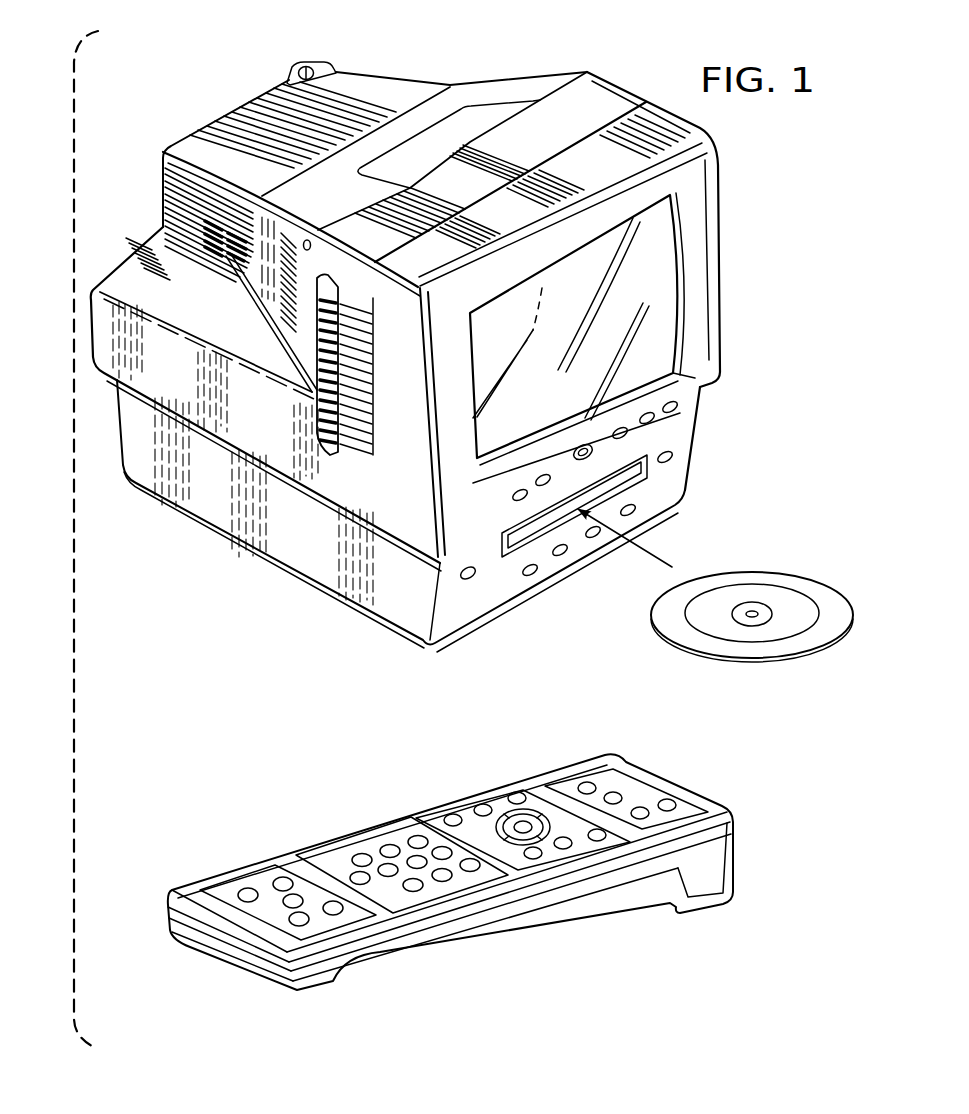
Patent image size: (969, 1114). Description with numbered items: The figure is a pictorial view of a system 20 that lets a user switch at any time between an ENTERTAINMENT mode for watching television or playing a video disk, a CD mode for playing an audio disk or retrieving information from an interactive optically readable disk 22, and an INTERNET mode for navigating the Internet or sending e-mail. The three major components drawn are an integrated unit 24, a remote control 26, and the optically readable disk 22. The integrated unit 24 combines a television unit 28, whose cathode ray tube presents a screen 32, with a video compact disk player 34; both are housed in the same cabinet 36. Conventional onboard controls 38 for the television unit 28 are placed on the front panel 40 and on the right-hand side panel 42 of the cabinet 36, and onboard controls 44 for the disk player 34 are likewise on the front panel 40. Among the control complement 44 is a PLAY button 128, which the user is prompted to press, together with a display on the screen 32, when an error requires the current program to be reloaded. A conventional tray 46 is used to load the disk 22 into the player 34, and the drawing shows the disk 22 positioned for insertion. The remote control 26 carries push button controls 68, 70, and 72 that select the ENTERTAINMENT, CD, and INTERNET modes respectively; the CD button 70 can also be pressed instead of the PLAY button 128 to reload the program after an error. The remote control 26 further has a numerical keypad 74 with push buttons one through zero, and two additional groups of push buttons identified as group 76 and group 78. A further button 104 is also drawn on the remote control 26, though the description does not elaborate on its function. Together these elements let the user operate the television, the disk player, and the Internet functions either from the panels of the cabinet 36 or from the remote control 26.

The system 20 is at (67, 468).
The optically readable disk 22 is at (702, 653).
The integrated unit 24 is at (486, 67).
The remote control 26 is at (497, 854).
The television unit 28 is at (696, 212).
The screen 32 is at (658, 258).
The video compact disk player 34 is at (660, 477).
The cabinet 36 is at (308, 598).
The onboard controls for television unit 38 is at (690, 388).
The front panel 40 is at (708, 310).
The right-hand side panel 42 is at (697, 428).
The onboard controls for disk player 44 is at (652, 510).
The tray 46 is at (514, 558).
The push button control 68 is at (590, 782).
The CD button 70 is at (597, 841).
The push button control 72 is at (622, 793).
The numerical keypad 74 is at (390, 832).
The group of push buttons 76 is at (514, 790).
The group of push buttons 78 is at (253, 876).
The remote button 104 is at (675, 802).
The PLAY button 128 is at (469, 582).